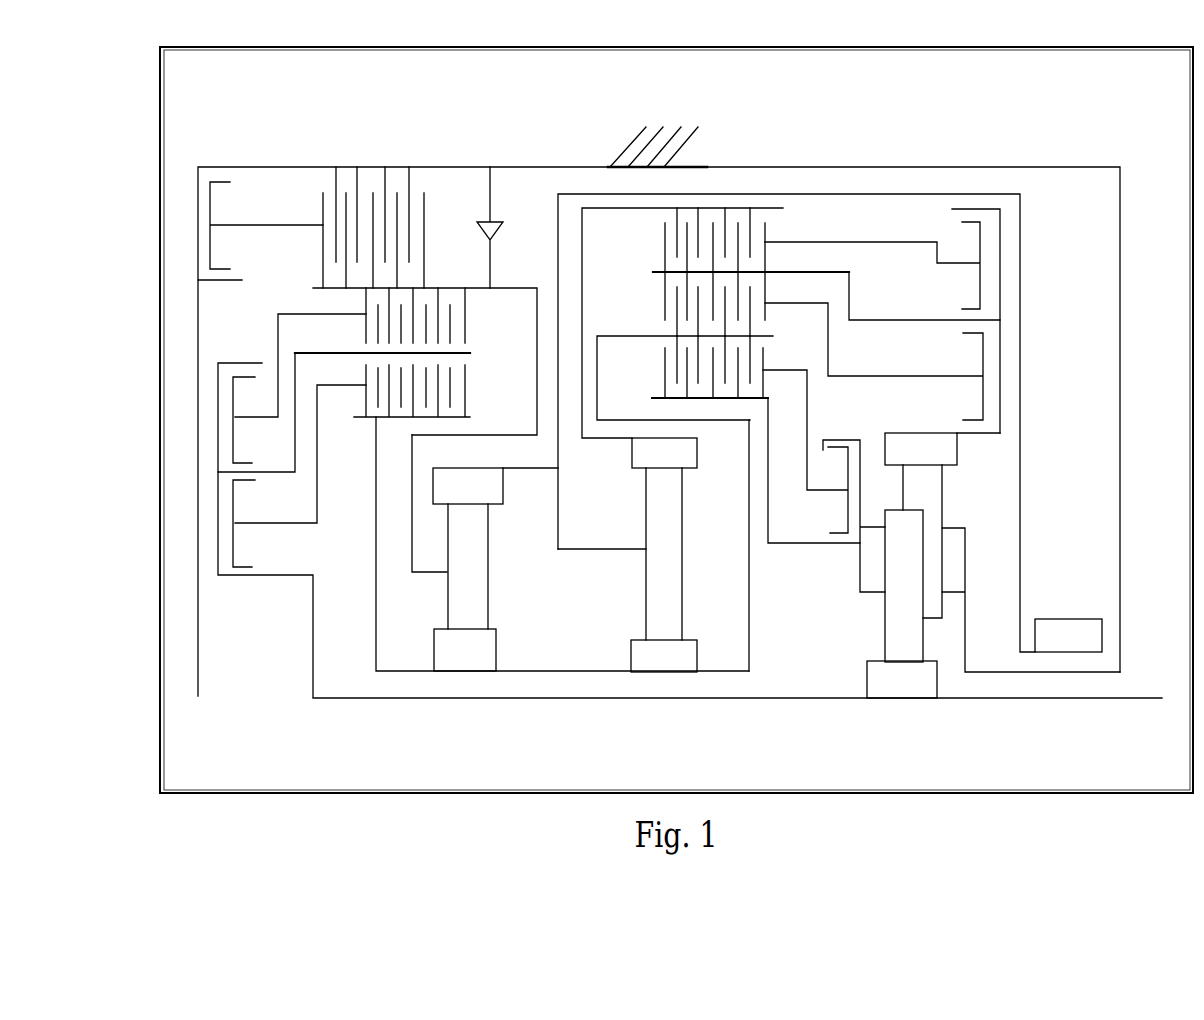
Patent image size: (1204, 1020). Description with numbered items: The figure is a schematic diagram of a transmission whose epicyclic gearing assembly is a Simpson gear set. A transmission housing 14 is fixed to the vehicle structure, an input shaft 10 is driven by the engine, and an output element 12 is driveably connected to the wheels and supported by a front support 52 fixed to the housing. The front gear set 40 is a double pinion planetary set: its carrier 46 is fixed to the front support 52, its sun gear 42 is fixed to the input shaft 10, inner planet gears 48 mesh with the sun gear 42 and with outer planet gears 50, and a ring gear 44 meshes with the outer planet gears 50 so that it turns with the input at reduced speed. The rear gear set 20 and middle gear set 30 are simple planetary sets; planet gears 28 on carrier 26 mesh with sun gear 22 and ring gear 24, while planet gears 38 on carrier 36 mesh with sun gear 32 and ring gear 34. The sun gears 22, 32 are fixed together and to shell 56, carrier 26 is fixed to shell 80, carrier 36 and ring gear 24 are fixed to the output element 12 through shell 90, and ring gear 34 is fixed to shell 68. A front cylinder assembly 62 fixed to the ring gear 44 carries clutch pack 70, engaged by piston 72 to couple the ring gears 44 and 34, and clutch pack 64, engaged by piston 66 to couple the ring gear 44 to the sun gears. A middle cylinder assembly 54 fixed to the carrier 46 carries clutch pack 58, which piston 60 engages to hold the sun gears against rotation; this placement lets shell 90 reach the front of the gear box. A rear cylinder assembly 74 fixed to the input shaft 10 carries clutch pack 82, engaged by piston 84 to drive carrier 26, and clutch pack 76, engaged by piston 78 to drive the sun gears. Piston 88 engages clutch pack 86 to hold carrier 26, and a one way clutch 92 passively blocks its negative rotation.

The input shaft 10 is at (1135, 697).
The output element 12 is at (1053, 644).
The transmission housing 14 is at (641, 136).
The rear gear set 20 is at (562, 584).
The sun gear 22 is at (446, 659).
The ring gear 24 is at (495, 486).
The carrier 26 is at (428, 572).
The planet gears 28 is at (468, 566).
The middle gear set 30 is at (653, 742).
The sun gear 32 is at (649, 666).
The ring gear 34 is at (664, 453).
The carrier 36 is at (611, 549).
The planet gears 38 is at (664, 554).
The front gear set 40 is at (893, 742).
The sun gear 42 is at (902, 679).
The ring gear 44 is at (942, 449).
The carrier 46 is at (965, 538).
The inner planet gears 48 is at (889, 588).
The outer planet gears 50 is at (909, 500).
The front support 52 is at (1120, 474).
The middle cylinder assembly 54 is at (818, 546).
The shell 56 is at (750, 633).
The clutch pack 58 is at (665, 377).
The piston 60 is at (836, 490).
The front cylinder assembly 62 is at (910, 321).
The clutch pack 64 is at (665, 318).
The piston 66 is at (893, 377).
The shell 68 is at (581, 273).
The clutch pack 70 is at (665, 250).
The piston 72 is at (920, 244).
The rear cylinder assembly 74 is at (268, 472).
The clutch pack 76 is at (465, 388).
The piston 78 is at (298, 523).
The shell 80 is at (502, 285).
The clutch pack 82 is at (466, 327).
The piston 84 is at (278, 345).
The clutch pack 86 is at (421, 245).
The piston 88 is at (258, 224).
The shell 90 is at (1018, 275).
The one way clutch 92 is at (495, 218).